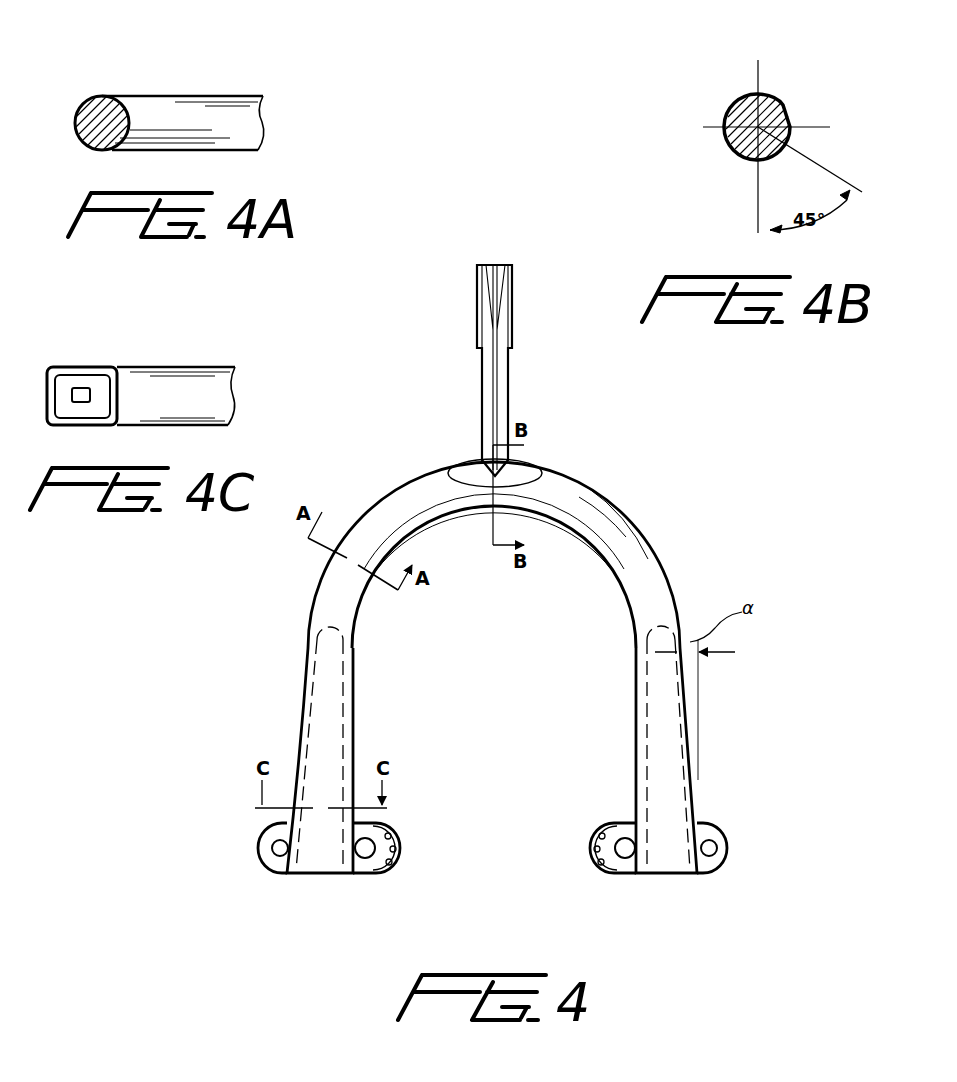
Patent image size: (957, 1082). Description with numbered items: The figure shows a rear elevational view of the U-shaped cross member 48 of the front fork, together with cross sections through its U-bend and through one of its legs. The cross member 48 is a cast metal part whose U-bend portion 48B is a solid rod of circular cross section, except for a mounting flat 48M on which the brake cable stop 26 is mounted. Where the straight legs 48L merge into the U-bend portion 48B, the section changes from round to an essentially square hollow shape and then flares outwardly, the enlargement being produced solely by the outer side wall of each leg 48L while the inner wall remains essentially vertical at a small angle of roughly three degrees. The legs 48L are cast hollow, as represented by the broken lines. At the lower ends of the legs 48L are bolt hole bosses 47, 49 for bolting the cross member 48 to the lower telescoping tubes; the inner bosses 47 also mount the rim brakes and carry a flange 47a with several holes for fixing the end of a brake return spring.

In FIG. 4, the brake cable stop 26 is at (513, 370).
In FIG. 4, the inner bolt hole boss 47 is at (366, 863).
In FIG. 4, the flange 47a is at (400, 856).
In FIG. 4, the cross member 48 is at (573, 556).
In FIG. 4A, the U-bend portion 48B is at (152, 96).
In FIG. 4C, the U-bend portion 48B is at (178, 367).
In FIG. 4, the U-bend portion 48B is at (572, 478).
In FIG. 4C, the legs 48L is at (72, 367).
In FIG. 4, the legs 48L is at (353, 718).
In FIG. 4, the mounting flat 48M is at (466, 473).
In FIG. 4, the outer bolt hole boss 49 is at (266, 838).